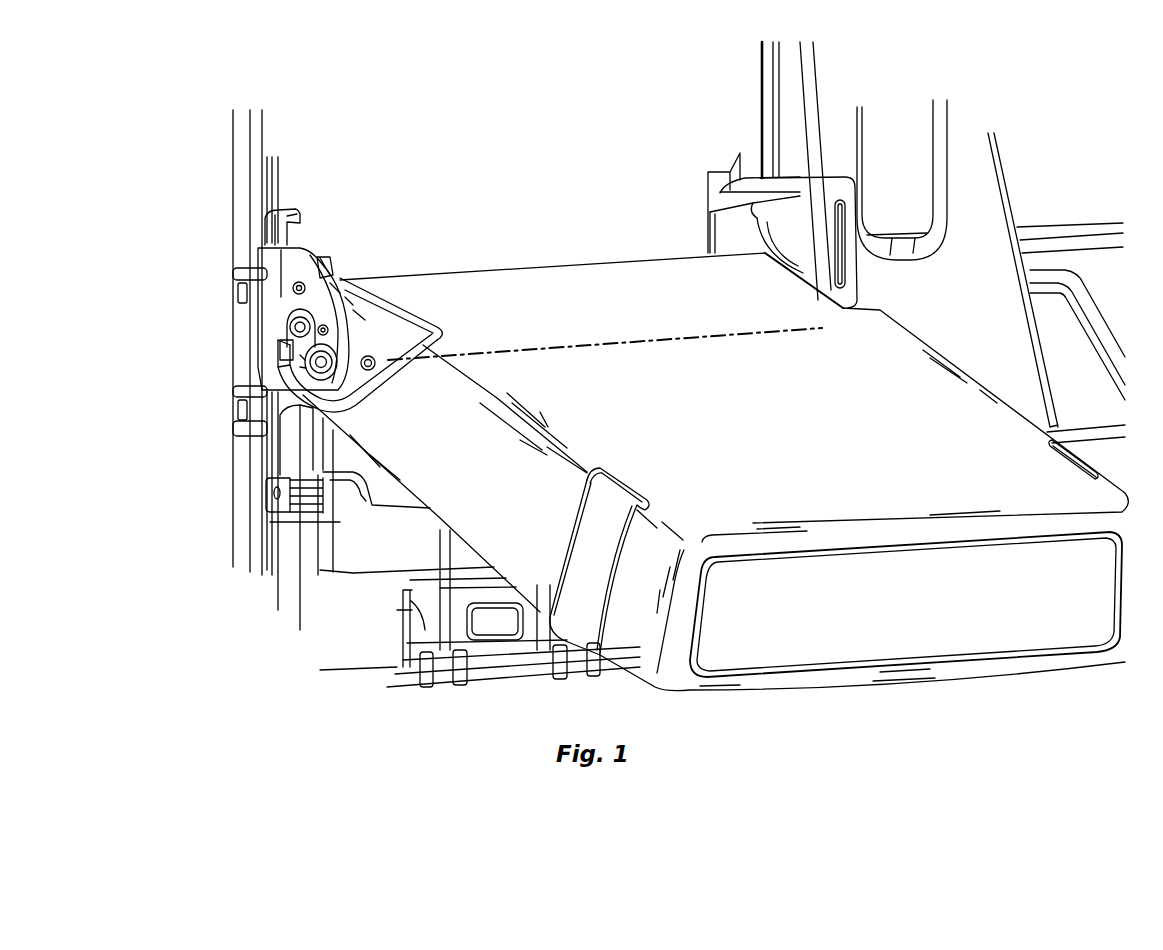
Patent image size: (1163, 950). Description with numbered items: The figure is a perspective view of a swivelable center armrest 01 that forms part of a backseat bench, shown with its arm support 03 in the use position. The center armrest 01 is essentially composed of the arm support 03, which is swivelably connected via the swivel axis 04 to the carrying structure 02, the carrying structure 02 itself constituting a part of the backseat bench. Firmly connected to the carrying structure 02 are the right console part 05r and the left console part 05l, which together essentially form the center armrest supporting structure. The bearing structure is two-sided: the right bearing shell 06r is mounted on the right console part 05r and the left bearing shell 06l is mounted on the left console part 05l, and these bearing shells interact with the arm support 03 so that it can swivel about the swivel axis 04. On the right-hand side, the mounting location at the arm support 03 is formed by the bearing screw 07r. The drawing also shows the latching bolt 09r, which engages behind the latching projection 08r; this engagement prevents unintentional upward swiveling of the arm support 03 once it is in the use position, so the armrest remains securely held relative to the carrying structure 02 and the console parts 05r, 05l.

The center armrest 01 is at (364, 143).
The carrying structure 02 is at (202, 532).
The arm support 03 is at (530, 322).
The swivel axis 04 is at (620, 342).
The right console part 05r is at (273, 270).
The right bearing shell 06r is at (334, 283).
The bearing screw 07r is at (293, 365).
The latching projection 08r is at (287, 340).
The latching bolt 09r is at (287, 328).
The left console part 05l is at (728, 220).
The left bearing shell 06l is at (728, 224).